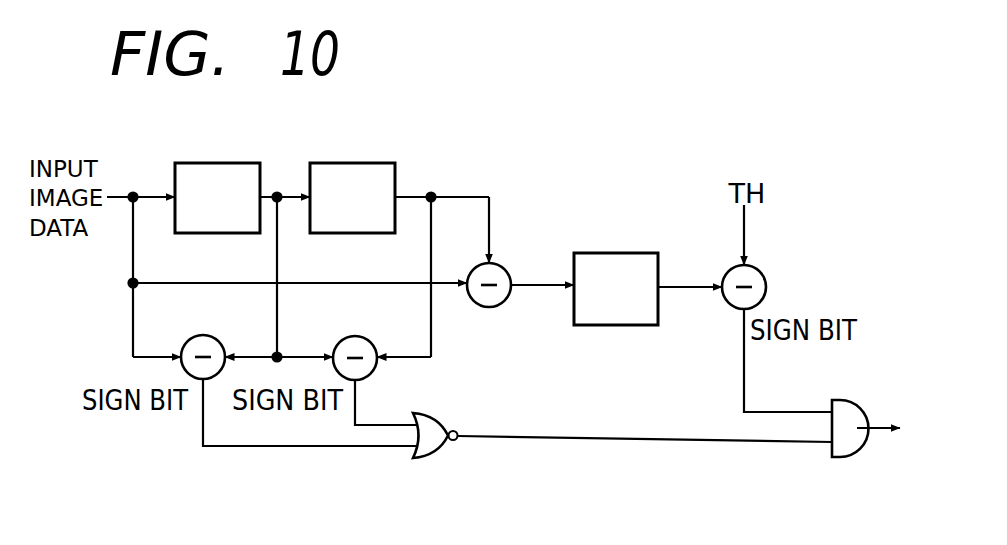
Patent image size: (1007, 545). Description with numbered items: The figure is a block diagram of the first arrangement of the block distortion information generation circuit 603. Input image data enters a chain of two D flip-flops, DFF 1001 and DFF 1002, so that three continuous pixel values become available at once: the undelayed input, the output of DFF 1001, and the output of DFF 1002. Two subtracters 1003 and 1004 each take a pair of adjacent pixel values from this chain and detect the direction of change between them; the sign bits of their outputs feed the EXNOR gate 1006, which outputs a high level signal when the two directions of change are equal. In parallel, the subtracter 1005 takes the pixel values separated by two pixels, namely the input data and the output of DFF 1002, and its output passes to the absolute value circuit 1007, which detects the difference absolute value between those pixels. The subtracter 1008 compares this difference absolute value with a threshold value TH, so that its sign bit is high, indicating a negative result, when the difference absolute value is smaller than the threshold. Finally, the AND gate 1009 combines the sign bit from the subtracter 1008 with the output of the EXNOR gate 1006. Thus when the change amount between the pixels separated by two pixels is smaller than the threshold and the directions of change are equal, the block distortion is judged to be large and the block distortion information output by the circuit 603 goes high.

The block distortion information generation circuit 603 is at (539, 95).
The DFF 1001 is at (243, 163).
The DFF 1002 is at (374, 163).
The subtracter 1003 is at (214, 337).
The subtracter 1004 is at (367, 336).
The subtracter 1005 is at (510, 267).
The EXNOR gate 1006 is at (441, 413).
The absolute value circuit 1007 is at (645, 253).
The subtracter 1008 is at (767, 277).
The AND gate 1009 is at (848, 401).